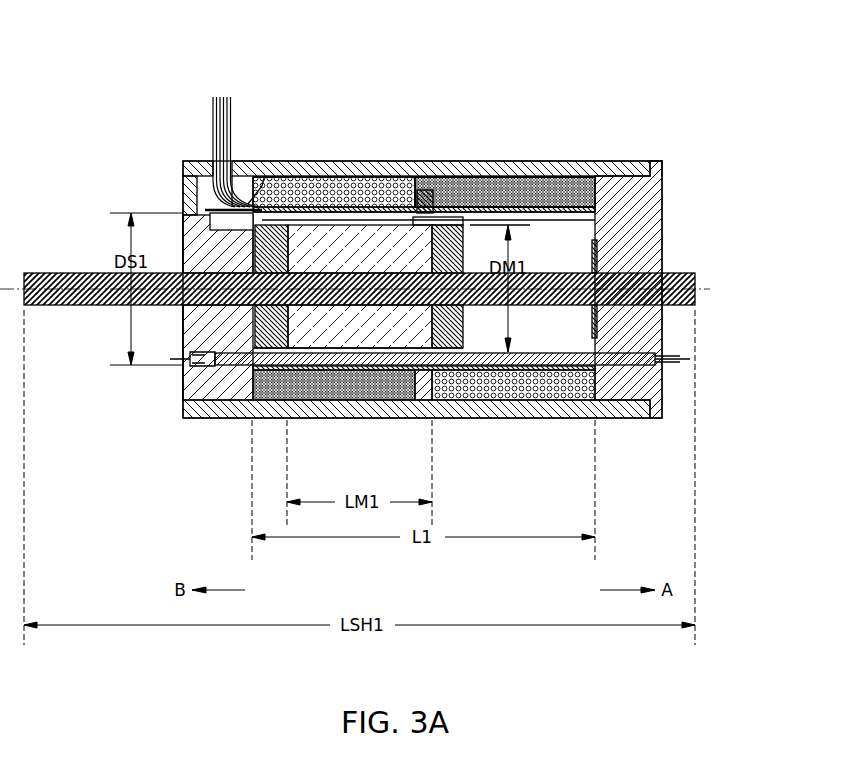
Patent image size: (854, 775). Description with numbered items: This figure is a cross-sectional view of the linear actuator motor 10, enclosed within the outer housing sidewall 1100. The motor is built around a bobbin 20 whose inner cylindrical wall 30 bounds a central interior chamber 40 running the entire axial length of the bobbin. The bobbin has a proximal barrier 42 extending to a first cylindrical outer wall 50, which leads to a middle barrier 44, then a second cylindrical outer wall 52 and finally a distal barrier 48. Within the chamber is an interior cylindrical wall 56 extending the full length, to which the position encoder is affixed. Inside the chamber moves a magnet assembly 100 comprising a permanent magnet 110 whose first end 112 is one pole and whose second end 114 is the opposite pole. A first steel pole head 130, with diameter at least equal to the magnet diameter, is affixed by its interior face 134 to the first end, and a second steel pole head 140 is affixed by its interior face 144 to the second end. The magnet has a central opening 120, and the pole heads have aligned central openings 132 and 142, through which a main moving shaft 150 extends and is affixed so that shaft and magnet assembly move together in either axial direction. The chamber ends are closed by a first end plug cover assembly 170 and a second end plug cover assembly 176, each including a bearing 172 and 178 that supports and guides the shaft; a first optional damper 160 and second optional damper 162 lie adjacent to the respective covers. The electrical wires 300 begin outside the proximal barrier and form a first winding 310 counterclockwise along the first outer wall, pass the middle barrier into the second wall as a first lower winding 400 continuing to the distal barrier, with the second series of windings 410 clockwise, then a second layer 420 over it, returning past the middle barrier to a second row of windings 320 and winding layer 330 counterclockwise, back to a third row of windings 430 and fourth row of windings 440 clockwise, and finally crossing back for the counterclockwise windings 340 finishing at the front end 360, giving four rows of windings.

The linear actuator motor 10 is at (678, 170).
The bobbin 20 is at (652, 164).
The inner cylindrical wall 30 is at (262, 178).
The central interior chamber 40 is at (556, 246).
The proximal barrier 42 is at (250, 160).
The middle barrier 44 is at (427, 190).
The distal barrier 48 is at (601, 176).
The first cylindrical outer wall 50 is at (312, 182).
The second cylindrical outer wall 52 is at (522, 180).
The interior cylindrical wall 56 is at (636, 215).
The magnet assembly 100 is at (522, 402).
The permanent magnet 110 is at (358, 328).
The first end of magnet 112 is at (285, 222).
The second end of magnet 114 is at (465, 218).
The central opening of magnet 120 is at (224, 368).
The first steel pole head 130 is at (200, 226).
The central opening of first steel pole head 132 is at (200, 400).
The interior face of first steel pole head 134 is at (297, 412).
The second steel pole head 140 is at (482, 402).
The central opening of second steel pole head 142 is at (440, 396).
The interior face of second steel pole head 144 is at (470, 338).
The main moving shaft 150 is at (662, 276).
The first optional damper 160 is at (183, 250).
The second optional damper 162 is at (598, 263).
The first end plug cover assembly 170 is at (190, 186).
The bearing of first end plug cover 172 is at (200, 326).
The second end plug cover assembly 176 is at (640, 192).
The bearing of second end plug cover 178 is at (630, 306).
The electrical wires 300 is at (214, 130).
The first winding 310 is at (340, 182).
The second row of windings 320 is at (378, 186).
The winding layer 330 is at (263, 172).
The windings at front end 340 is at (372, 212).
The front end of winding 360 is at (257, 163).
The first lower winding 400 is at (458, 188).
The second series of windings 410 is at (522, 186).
The second layer of windings 420 is at (592, 186).
The third row of windings 430 is at (572, 180).
The fourth row of windings 440 is at (504, 206).
The outer housing sidewall 1100 is at (352, 200).